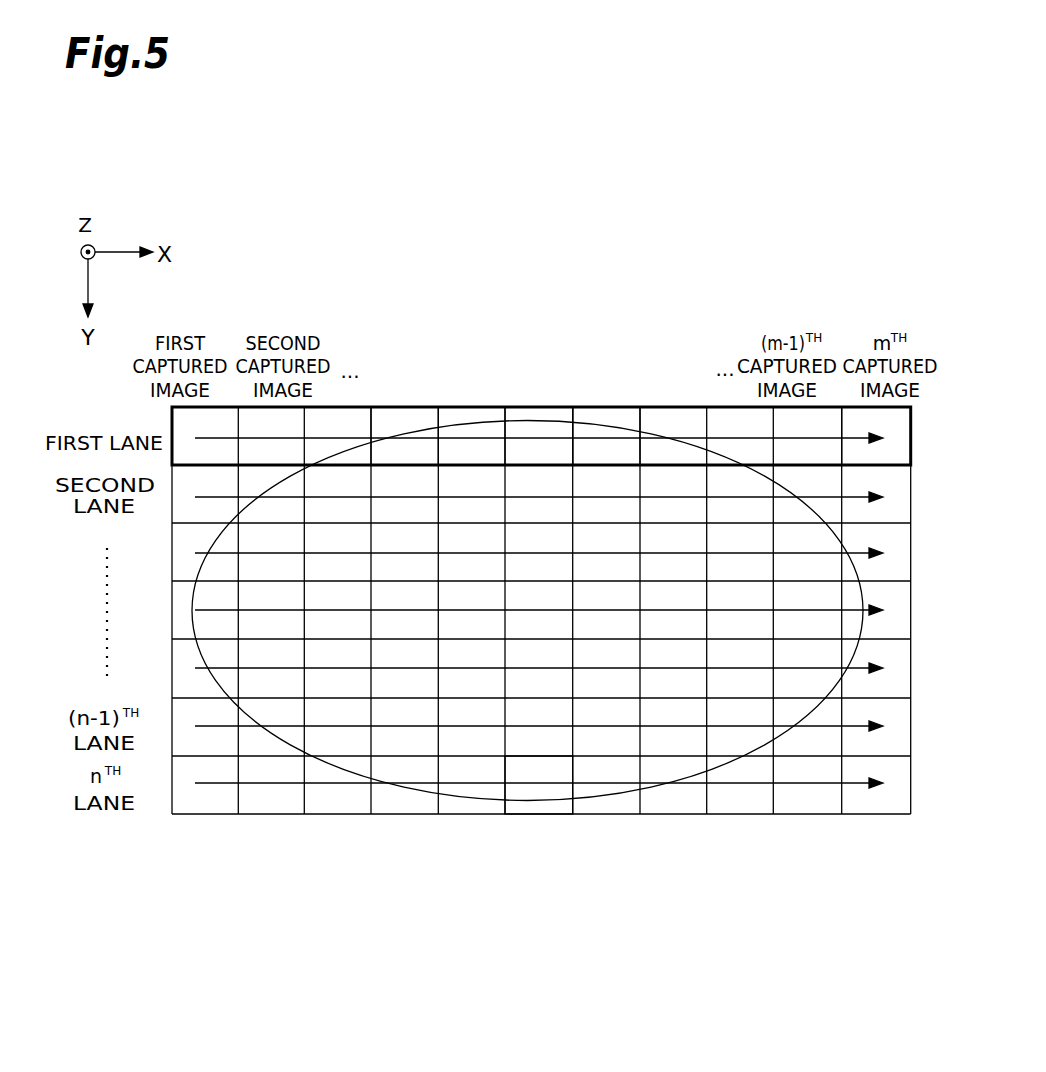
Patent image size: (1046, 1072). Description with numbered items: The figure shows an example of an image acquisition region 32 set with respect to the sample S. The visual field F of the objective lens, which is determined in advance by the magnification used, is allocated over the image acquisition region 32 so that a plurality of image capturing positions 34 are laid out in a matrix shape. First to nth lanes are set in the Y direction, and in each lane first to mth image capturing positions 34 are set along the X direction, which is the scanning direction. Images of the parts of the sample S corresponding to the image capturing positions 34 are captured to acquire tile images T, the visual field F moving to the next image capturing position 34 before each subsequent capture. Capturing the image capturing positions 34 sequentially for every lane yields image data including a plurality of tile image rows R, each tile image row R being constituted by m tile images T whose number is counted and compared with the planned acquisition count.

The image acquisition region 32 is at (892, 827).
The image capturing position 34 is at (540, 432).
The tile image T is at (398, 413).
The sample S is at (400, 790).
The visual field F is at (172, 408).
The tile image row R is at (911, 443).